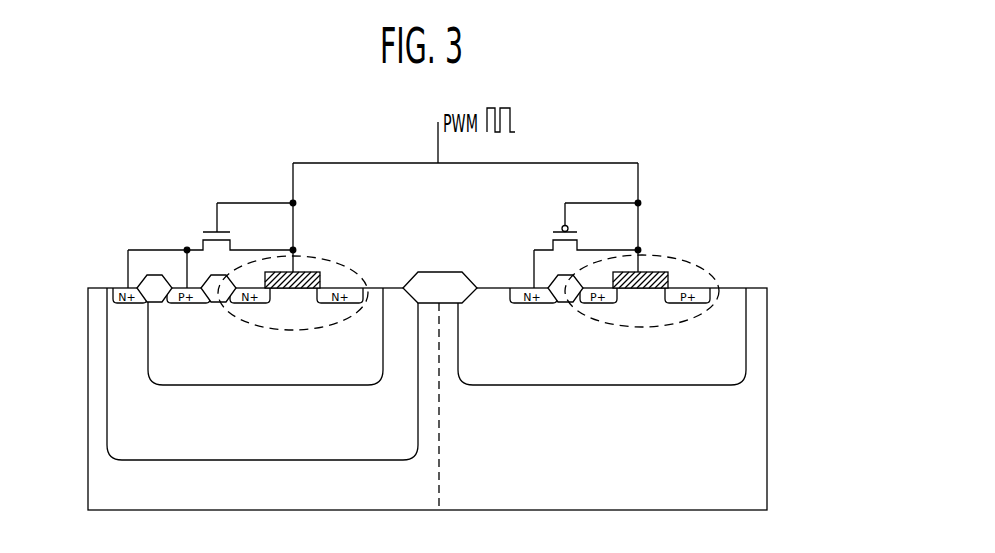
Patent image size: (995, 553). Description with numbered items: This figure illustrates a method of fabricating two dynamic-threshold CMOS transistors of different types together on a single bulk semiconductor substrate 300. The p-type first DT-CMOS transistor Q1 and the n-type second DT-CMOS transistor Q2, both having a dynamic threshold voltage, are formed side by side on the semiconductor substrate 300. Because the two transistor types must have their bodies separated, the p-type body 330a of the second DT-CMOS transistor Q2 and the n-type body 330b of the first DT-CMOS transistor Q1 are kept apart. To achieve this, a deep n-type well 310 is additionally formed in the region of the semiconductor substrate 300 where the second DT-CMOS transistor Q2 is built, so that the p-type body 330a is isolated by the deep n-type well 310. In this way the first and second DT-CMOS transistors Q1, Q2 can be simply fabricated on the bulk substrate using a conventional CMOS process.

The semiconductor substrate 300 is at (752, 417).
The deep n-type well 310 is at (126, 417).
The p-type body 330a is at (155, 341).
The n-type body 330b is at (725, 342).
The first DT-CMOS transistor Q1 is at (683, 259).
The second DT-CMOS transistor Q2 is at (335, 259).